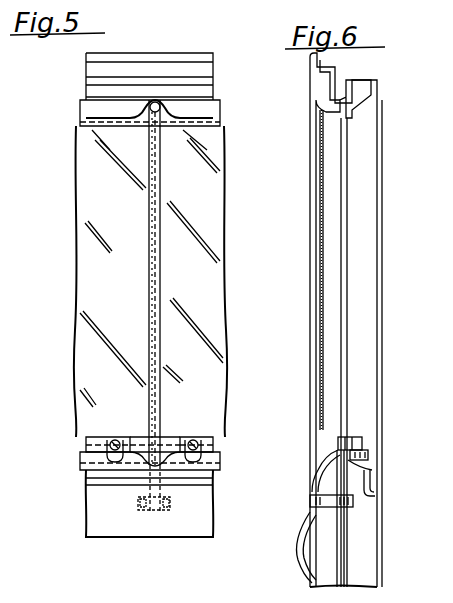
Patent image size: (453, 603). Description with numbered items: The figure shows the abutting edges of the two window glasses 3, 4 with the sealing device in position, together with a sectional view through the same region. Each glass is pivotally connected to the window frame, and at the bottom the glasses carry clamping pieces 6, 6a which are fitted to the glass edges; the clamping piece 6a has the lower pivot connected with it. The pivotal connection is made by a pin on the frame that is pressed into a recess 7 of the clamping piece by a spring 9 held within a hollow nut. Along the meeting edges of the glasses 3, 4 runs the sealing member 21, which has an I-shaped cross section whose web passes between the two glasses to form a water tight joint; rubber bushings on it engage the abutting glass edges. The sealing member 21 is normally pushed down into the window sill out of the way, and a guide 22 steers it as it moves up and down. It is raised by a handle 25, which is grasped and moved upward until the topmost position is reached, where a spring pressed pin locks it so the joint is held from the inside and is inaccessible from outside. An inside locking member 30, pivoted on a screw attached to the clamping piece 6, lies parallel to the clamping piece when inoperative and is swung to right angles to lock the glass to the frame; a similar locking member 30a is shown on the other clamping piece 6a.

In FIG. 5, the glass 3 is at (190, 210).
In FIG. 6, the glass 3 is at (348, 190).
In FIG. 5, the glass 4 is at (110, 215).
In FIG. 5, the clamping piece 6 is at (100, 442).
In FIG. 5, the clamping piece 6a is at (208, 442).
In FIG. 6, the clamping piece 6a is at (338, 445).
In FIG. 5, the recess 7 is at (184, 43).
In FIG. 5, the spring 9 is at (135, 262).
In FIG. 5, the sealing member 21 is at (162, 357).
In FIG. 6, the sealing member 21 is at (350, 530).
In FIG. 5, the guide 22 is at (168, 507).
In FIG. 6, the guide 22 is at (322, 510).
In FIG. 5, the handle 25 is at (158, 102).
In FIG. 6, the handle 25 is at (368, 458).
In FIG. 5, the locking member 30 is at (118, 440).
In FIG. 5, the clip 30a is at (185, 440).
In FIG. 6, the clip 30a is at (362, 440).